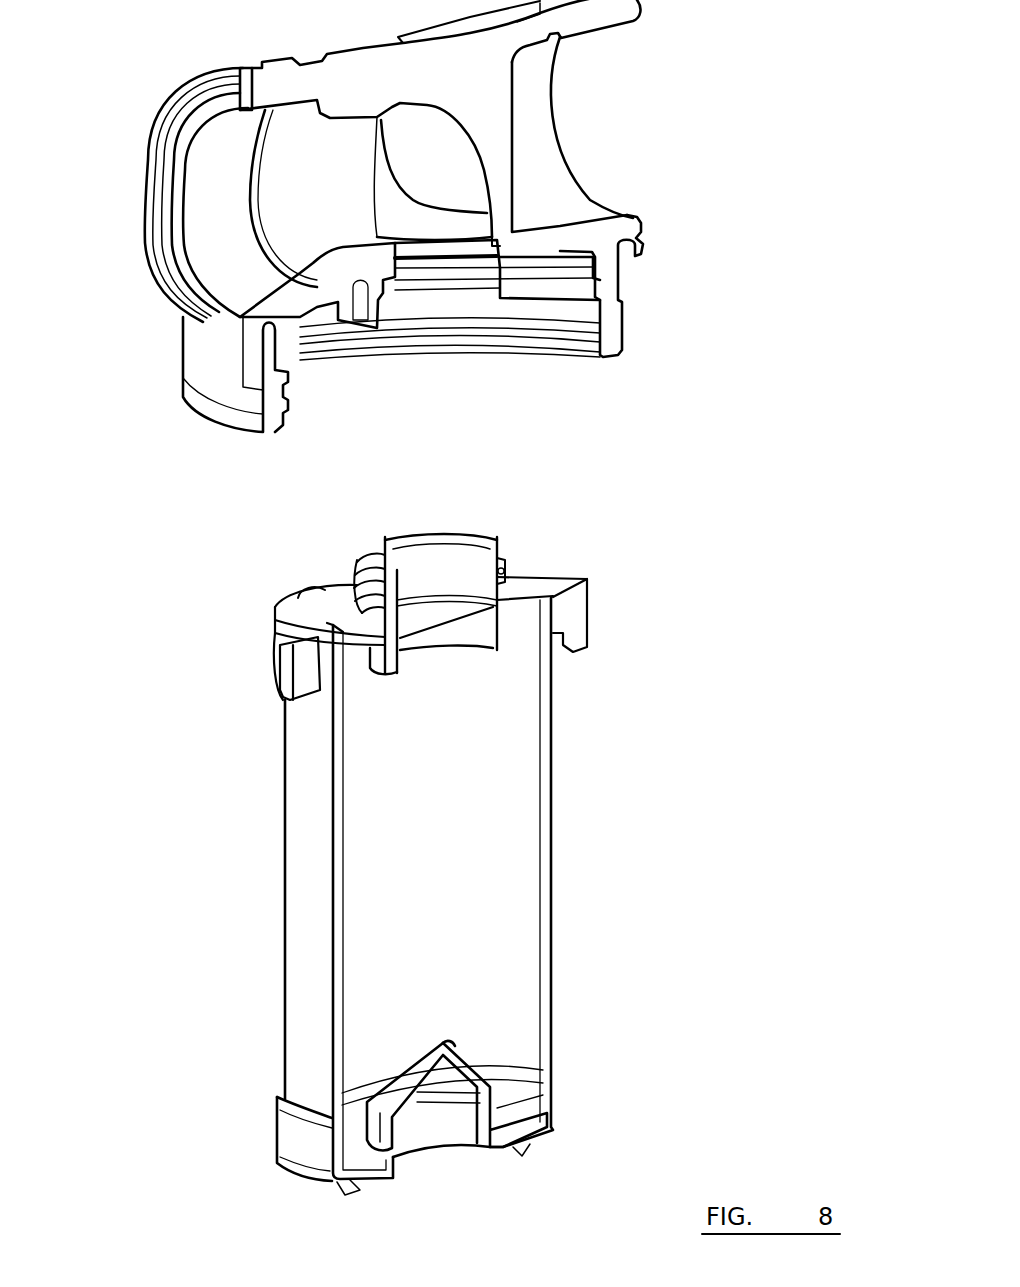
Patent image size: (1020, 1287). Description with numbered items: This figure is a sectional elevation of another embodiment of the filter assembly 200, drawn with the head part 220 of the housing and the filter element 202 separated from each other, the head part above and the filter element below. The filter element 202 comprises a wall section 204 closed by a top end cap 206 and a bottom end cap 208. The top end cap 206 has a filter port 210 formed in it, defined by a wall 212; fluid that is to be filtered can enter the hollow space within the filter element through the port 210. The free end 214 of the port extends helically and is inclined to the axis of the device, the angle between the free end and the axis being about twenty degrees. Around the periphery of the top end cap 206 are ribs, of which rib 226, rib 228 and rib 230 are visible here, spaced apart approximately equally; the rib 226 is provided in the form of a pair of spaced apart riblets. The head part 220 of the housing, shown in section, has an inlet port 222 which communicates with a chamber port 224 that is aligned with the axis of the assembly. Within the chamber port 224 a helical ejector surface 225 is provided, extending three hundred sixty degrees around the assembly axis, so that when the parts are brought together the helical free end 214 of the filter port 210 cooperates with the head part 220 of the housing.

The filter assembly 200 is at (612, 172).
The filter element 202 is at (280, 880).
The wall section 204 is at (548, 910).
The top end cap 206 is at (520, 580).
The bottom end cap 208 is at (555, 1133).
The filter port 210 is at (437, 575).
The wall 212 is at (503, 555).
The free end of the port 214 is at (412, 534).
The head part of the housing 220 is at (135, 272).
The inlet port 222 is at (237, 219).
The chamber port 224 is at (425, 240).
The helical ejector surface 225 is at (480, 258).
The rib 226 is at (290, 683).
The rib 228 is at (300, 590).
The rib 230 is at (575, 615).